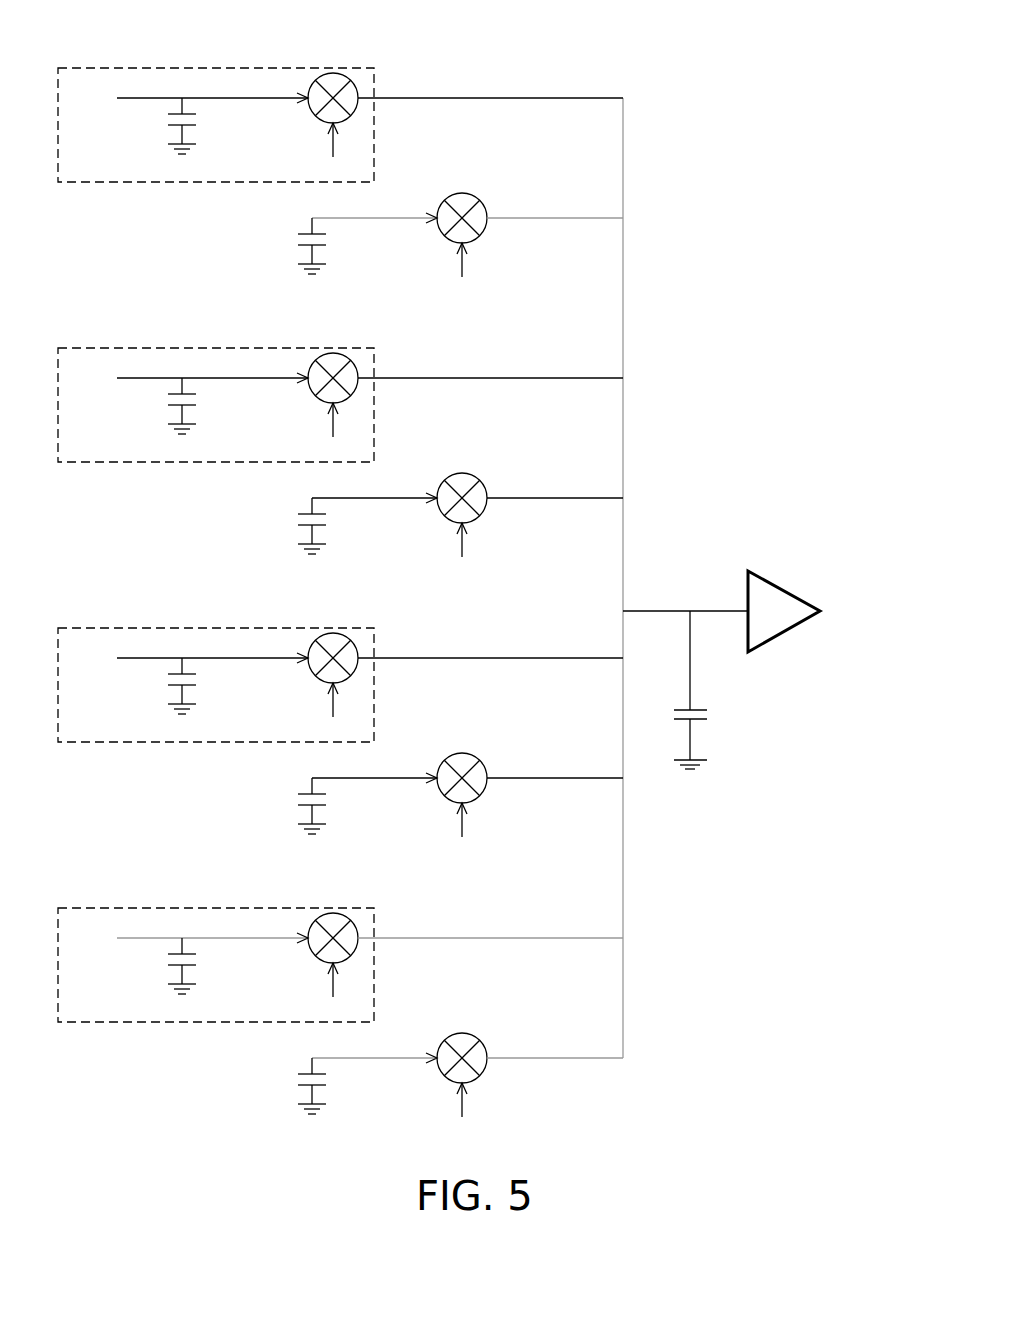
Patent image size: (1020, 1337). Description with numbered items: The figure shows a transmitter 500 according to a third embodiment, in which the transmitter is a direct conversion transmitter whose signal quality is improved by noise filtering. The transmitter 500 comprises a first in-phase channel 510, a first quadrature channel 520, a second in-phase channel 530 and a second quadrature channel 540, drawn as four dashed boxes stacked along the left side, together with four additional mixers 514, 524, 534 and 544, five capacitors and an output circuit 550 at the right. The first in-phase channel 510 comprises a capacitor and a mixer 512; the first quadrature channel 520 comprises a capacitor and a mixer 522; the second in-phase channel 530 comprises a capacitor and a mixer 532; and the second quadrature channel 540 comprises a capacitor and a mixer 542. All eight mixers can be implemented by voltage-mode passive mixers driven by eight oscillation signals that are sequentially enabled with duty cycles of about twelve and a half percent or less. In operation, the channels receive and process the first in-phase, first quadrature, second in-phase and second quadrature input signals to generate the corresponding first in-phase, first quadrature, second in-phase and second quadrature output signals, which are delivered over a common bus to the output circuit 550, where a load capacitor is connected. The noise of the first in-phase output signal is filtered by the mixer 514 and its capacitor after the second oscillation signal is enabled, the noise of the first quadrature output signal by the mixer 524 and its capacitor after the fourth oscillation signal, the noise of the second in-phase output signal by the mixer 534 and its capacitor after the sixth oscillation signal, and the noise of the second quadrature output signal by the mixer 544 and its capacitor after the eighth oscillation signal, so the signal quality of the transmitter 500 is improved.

The transmitter 500 is at (724, 93).
The first in-phase channel 510 is at (340, 100).
The mixer 512 is at (334, 73).
The mixer 514 is at (462, 193).
The first quadrature channel 520 is at (340, 380).
The mixer 522 is at (334, 353).
The mixer 524 is at (462, 473).
The second in-phase channel 530 is at (340, 660).
The mixer 532 is at (334, 633).
The mixer 534 is at (462, 753).
The second quadrature channel 540 is at (340, 940).
The mixer 542 is at (334, 913).
The mixer 544 is at (462, 1033).
The output circuit 550 is at (790, 588).